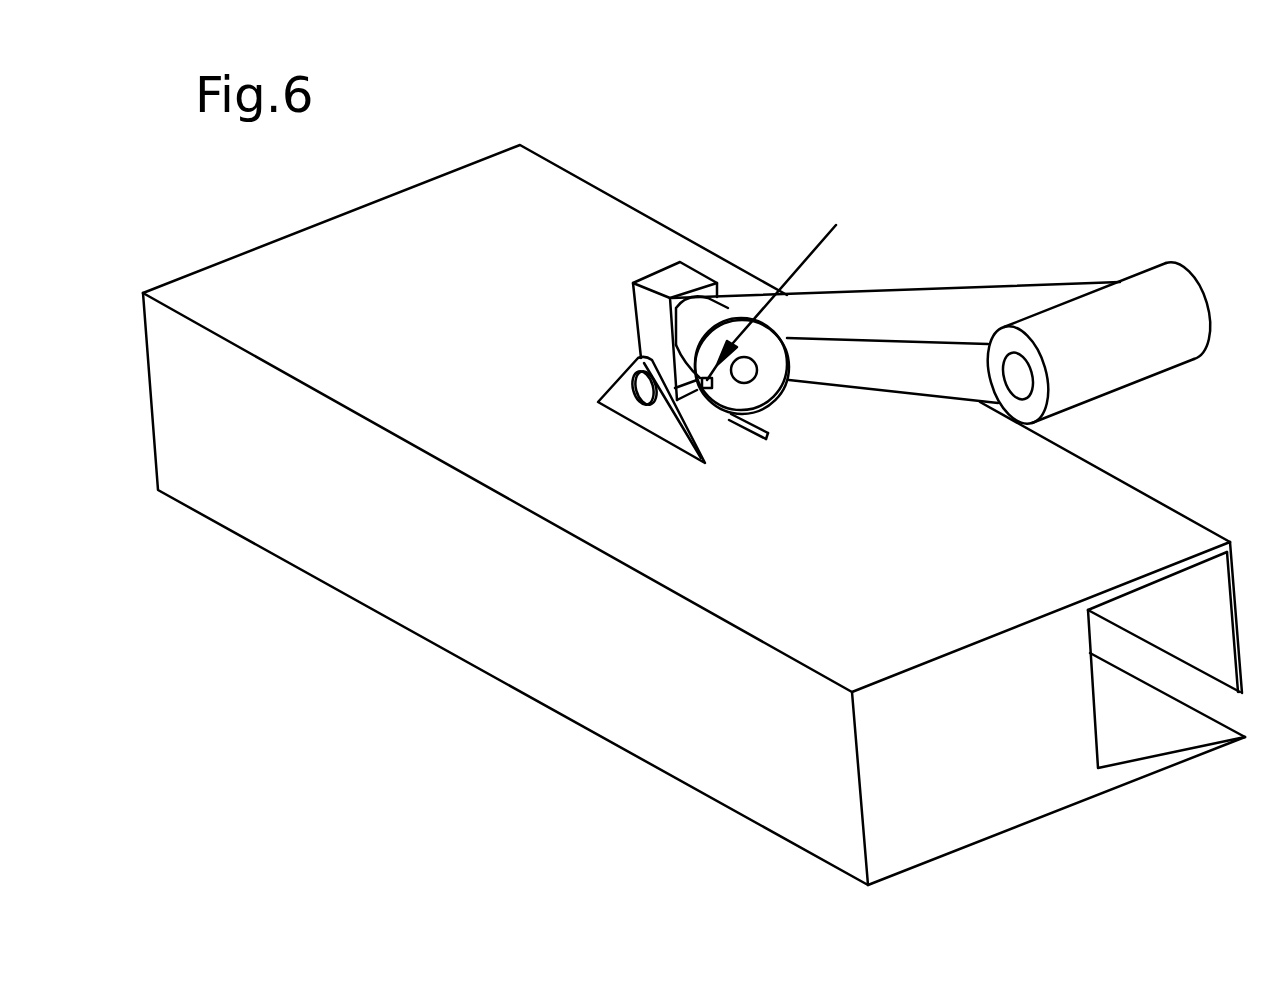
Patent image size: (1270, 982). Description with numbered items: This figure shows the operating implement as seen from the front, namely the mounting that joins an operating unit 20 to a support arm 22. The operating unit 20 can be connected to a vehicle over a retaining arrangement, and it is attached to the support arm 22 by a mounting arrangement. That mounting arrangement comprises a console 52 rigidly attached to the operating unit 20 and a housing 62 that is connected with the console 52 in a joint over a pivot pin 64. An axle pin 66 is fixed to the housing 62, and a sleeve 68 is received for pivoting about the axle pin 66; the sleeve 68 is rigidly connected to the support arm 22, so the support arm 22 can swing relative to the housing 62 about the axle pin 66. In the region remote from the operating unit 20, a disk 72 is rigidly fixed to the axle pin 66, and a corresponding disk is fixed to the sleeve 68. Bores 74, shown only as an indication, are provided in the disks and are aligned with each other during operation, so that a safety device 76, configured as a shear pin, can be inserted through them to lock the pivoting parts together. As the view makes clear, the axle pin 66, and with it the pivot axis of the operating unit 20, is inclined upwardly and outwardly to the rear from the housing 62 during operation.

The operating unit 20 is at (481, 271).
The support arm 22 is at (1002, 298).
The console 52 is at (657, 420).
The housing 62 is at (663, 279).
The pivot pin 64 is at (643, 388).
The axle pin 66 is at (748, 372).
The sleeve 68 is at (703, 318).
The disk 72 is at (770, 436).
The bore 74 is at (795, 286).
The safety device 76 is at (712, 388).